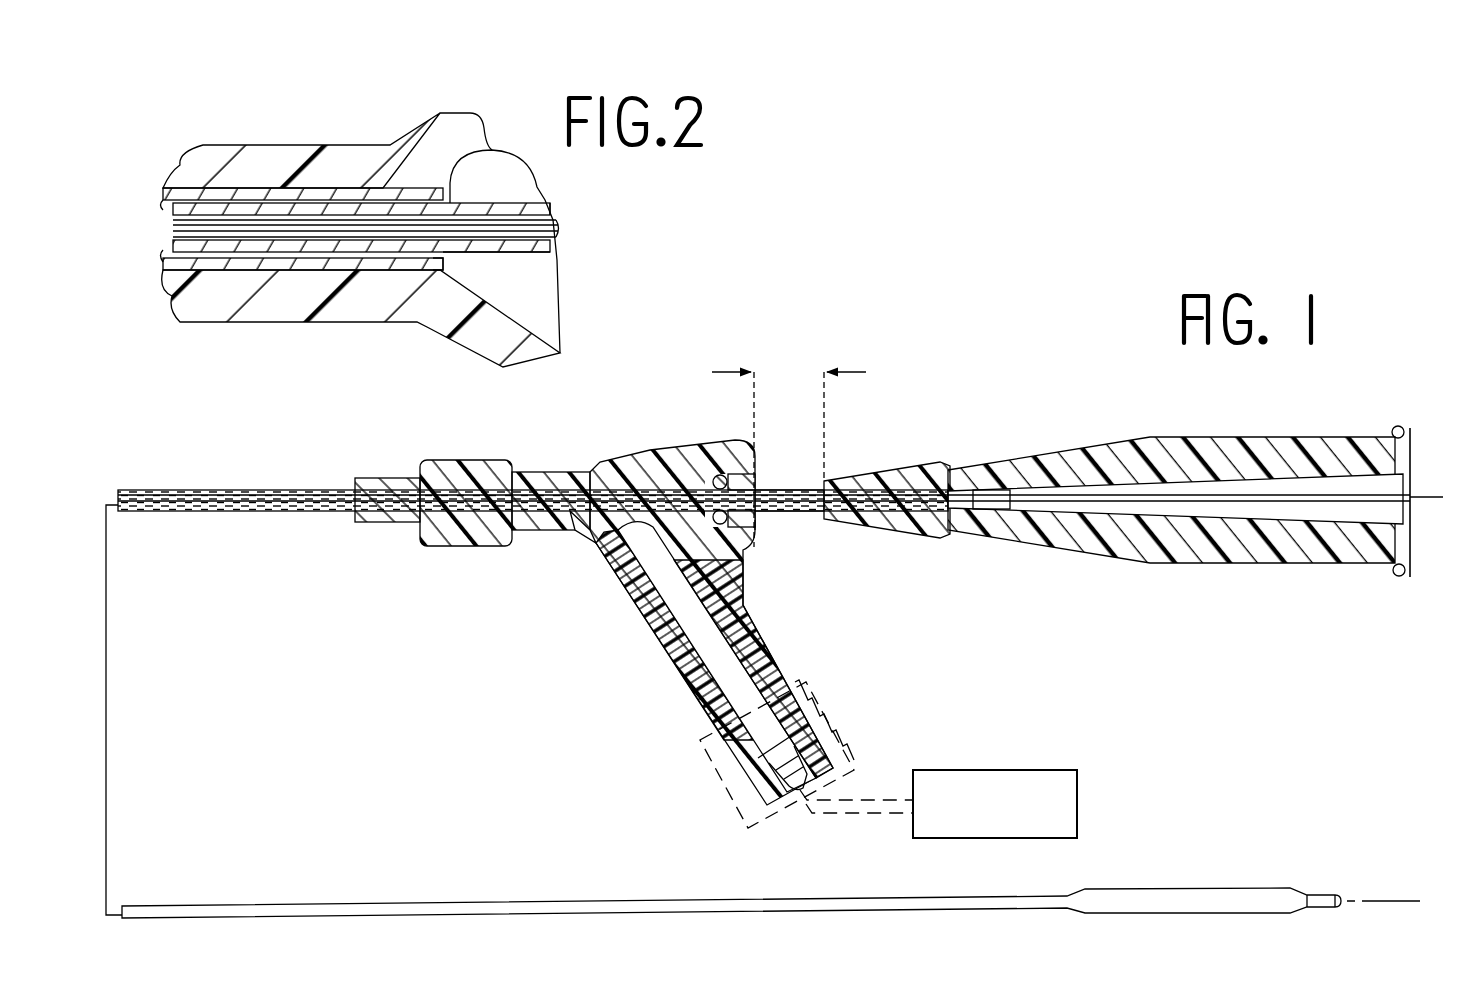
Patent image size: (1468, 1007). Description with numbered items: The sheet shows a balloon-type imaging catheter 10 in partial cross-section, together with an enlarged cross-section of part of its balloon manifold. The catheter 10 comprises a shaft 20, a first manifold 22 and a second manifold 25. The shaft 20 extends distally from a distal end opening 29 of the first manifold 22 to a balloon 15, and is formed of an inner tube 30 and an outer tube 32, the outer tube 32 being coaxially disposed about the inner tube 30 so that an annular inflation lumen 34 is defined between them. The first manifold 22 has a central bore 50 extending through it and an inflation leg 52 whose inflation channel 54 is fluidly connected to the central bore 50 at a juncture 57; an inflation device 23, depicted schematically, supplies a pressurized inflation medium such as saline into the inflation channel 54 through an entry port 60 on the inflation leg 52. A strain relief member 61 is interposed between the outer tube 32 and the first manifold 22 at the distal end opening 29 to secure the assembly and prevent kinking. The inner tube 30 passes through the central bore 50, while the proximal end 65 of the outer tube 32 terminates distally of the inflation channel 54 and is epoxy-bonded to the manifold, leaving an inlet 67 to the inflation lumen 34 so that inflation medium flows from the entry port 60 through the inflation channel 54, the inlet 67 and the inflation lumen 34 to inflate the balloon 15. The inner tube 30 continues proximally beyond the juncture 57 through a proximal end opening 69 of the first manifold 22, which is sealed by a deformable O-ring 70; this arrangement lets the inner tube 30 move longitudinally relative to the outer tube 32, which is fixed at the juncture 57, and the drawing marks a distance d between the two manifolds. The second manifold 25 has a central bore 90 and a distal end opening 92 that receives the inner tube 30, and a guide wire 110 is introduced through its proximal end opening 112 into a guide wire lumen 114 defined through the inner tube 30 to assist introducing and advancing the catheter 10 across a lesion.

In FIG. 1, the balloon-type imaging catheter 10 is at (1204, 702).
In FIG. 1, the balloon 15 is at (1210, 886).
In FIG. 1, the shaft 20 is at (478, 892).
In FIG. 1, the first manifold 22 is at (542, 468).
In FIG. 1, the inflation device 23 is at (1086, 778).
In FIG. 1, the second manifold 25 is at (1088, 437).
In FIG. 1, the distal end opening 29 is at (418, 474).
In FIG. 2, the inner tube 30 is at (303, 206).
In FIG. 1, the inner tube 30 is at (790, 522).
In FIG. 2, the outer tube 32 is at (239, 188).
In FIG. 1, the outer tube 32 is at (228, 488).
In FIG. 2, the annular inflation lumen 34 is at (160, 204).
In FIG. 1, the central bore 50 is at (630, 478).
In FIG. 1, the inflation leg 52 is at (678, 677).
In FIG. 1, the inflation channel 54 is at (740, 676).
In FIG. 2, the juncture 57 is at (522, 296).
In FIG. 1, the juncture 57 is at (638, 513).
In FIG. 1, the entry port 60 is at (823, 777).
In FIG. 1, the strain relief member 61 is at (357, 524).
In FIG. 2, the proximal end 65 is at (432, 272).
In FIG. 2, the inlet 67 is at (452, 256).
In FIG. 1, the proximal end opening 69 is at (763, 527).
In FIG. 1, the deformable O-ring 70 is at (720, 471).
In FIG. 1, the central bore 90 is at (1307, 512).
In FIG. 1, the distal end opening 92 is at (812, 522).
In FIG. 2, the guide wire 110 is at (543, 203).
In FIG. 1, the guide wire 110 is at (1424, 485).
In FIG. 1, the proximal end opening 112 is at (1406, 508).
In FIG. 2, the guide wire lumen 114 is at (369, 224).
In FIG. 1, the guide wire lumen 114 is at (1337, 488).
In FIG. 1, the gap distance d is at (789, 449).